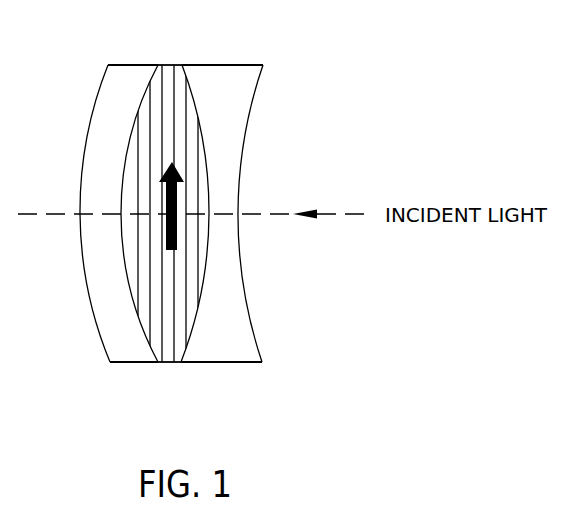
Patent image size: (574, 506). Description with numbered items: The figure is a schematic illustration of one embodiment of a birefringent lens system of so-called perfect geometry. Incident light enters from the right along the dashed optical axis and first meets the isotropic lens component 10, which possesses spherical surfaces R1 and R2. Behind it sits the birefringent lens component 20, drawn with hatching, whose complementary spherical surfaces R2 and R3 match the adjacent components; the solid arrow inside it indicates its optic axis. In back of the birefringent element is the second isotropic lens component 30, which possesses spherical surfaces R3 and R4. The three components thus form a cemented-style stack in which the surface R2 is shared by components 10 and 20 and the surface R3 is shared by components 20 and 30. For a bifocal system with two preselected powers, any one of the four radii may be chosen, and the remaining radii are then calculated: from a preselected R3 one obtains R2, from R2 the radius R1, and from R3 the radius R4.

The isotropic lens component 10 is at (247, 213).
The birefringent lens component 20 is at (155, 220).
The isotropic lens component 30 is at (97, 224).
The spherical surface R1 is at (256, 94).
The spherical surface R2 is at (197, 97).
The spherical surface R3 is at (137, 109).
The spherical surface R4 is at (90, 127).